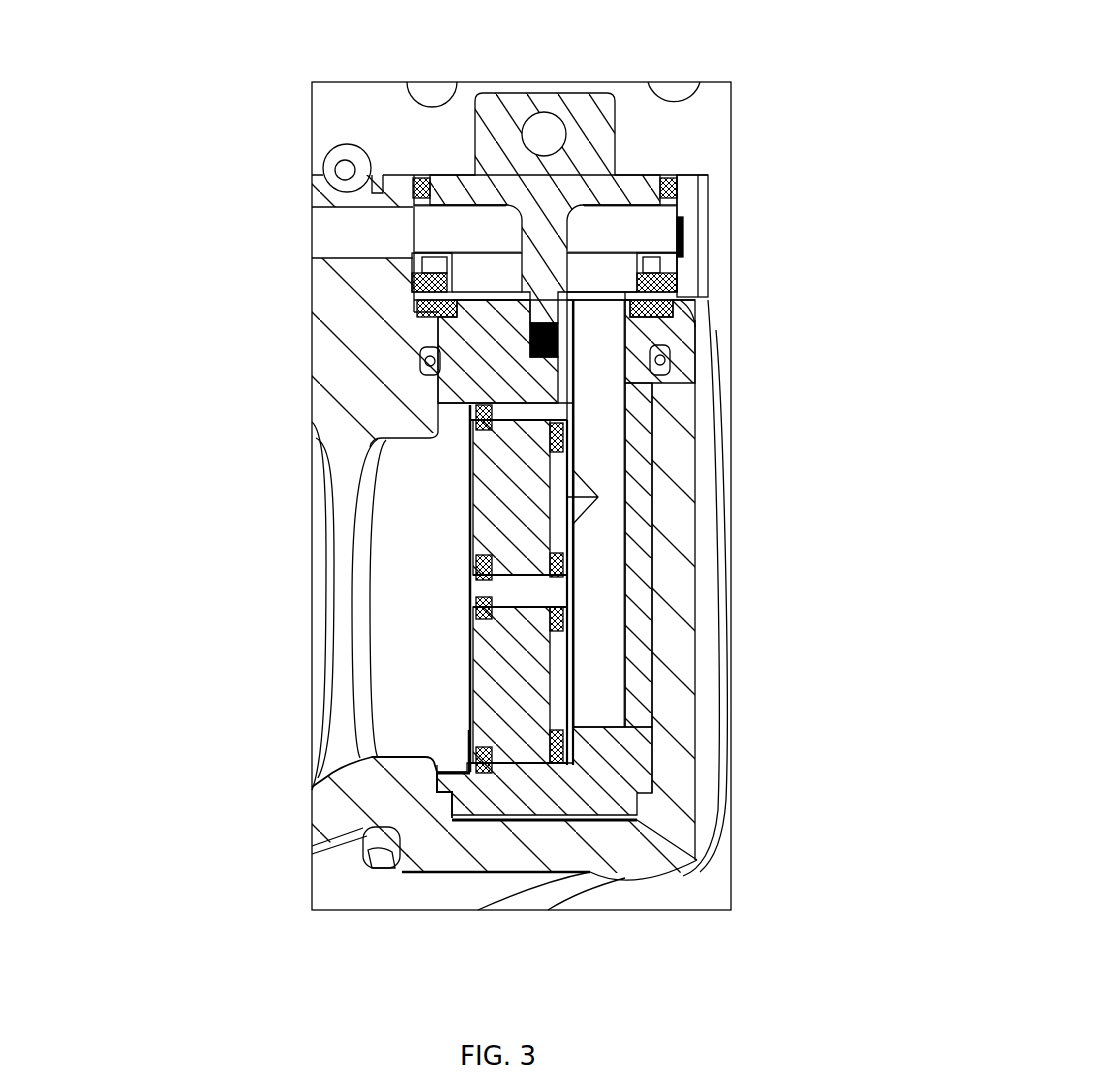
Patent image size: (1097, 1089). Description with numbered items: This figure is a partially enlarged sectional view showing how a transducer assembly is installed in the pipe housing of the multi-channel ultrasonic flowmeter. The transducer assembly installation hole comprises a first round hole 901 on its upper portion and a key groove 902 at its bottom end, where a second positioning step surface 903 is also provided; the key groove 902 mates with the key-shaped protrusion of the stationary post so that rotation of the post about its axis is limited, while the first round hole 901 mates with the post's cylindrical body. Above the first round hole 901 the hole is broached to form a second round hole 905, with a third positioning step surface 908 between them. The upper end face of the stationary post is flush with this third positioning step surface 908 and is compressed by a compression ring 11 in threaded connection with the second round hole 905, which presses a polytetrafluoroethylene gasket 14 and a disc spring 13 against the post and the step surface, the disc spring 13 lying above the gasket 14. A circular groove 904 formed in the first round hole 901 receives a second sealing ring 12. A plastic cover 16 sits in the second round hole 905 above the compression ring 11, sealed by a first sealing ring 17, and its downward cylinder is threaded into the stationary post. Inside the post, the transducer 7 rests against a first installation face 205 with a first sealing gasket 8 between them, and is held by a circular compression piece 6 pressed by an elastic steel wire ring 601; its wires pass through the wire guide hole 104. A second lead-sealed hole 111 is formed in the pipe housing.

The circular compression piece 6 is at (487, 563).
The transducer 7 is at (507, 525).
The first sealing gasket 8 is at (553, 570).
The compression ring 11 is at (653, 264).
The second sealing ring 12 is at (660, 359).
The disc spring 13 is at (635, 297).
The polytetrafluoroethylene gasket 14 is at (676, 314).
The plastic cover 16 is at (615, 122).
The first sealing ring 17 is at (706, 173).
The wire guide hole 104 is at (602, 565).
The second lead-sealed hole 111 is at (345, 170).
The first installation face 205 is at (553, 643).
The elastic steel wire ring 601 is at (447, 777).
The first round hole 901 is at (652, 385).
The key groove 902 is at (565, 820).
The second positioning step surface 903 is at (648, 793).
The circular groove 904 is at (430, 360).
The second round hole 905 is at (625, 233).
The third positioning step surface 908 is at (415, 303).